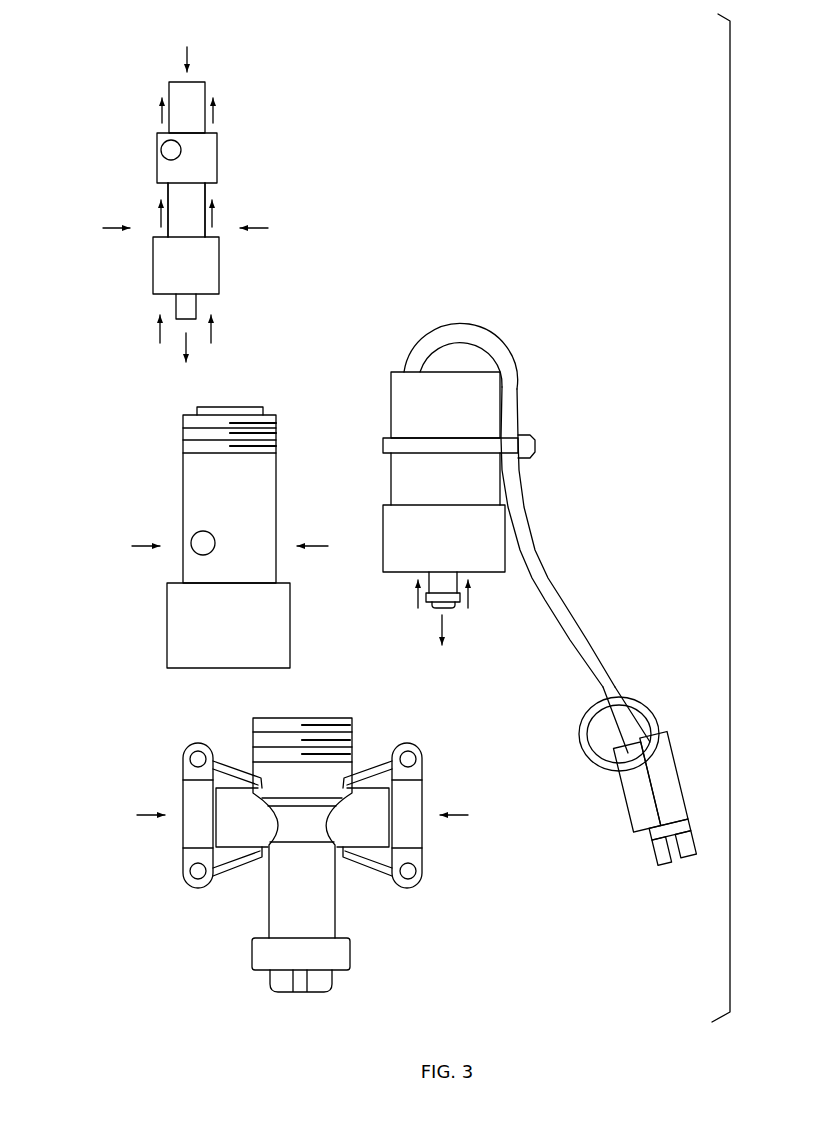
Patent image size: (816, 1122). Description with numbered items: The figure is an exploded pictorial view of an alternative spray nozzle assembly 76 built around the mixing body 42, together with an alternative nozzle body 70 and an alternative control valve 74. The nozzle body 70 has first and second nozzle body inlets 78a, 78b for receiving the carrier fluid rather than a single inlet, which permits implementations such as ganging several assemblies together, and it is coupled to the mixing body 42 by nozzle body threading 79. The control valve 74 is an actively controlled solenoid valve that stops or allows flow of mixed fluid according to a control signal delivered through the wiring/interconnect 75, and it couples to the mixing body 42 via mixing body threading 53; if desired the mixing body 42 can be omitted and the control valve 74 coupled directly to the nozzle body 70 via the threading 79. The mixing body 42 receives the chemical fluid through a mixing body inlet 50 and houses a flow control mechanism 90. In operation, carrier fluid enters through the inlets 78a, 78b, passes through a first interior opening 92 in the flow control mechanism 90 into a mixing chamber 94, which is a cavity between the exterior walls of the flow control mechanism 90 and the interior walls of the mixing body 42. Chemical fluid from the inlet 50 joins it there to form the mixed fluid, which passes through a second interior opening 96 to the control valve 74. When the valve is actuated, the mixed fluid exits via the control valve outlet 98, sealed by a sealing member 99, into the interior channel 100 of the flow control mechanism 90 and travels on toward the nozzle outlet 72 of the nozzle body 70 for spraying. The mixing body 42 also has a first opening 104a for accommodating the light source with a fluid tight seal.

The spray nozzle assembly 76 is at (70, 455).
The interior channel 100 is at (192, 92).
The flow control mechanism 90 is at (203, 156).
The first opening 104a is at (165, 153).
The second interior opening 96 is at (158, 184).
The mixing chamber 94 is at (160, 228).
The first interior opening 92 is at (158, 296).
The mixing body threading 53 is at (259, 433).
The mixing body inlet 50 is at (203, 540).
The mixing body 42 is at (192, 642).
The nozzle body threading 79 is at (327, 742).
The first nozzle body inlet 78a is at (183, 827).
The second nozzle body inlet 78b is at (423, 827).
The nozzle body 70 is at (288, 892).
The nozzle outlet 72 is at (283, 983).
The control valve 74 is at (477, 408).
The wiring/interconnect 75 is at (560, 622).
The control valve outlet 98 is at (437, 608).
The sealing member 99 is at (449, 608).